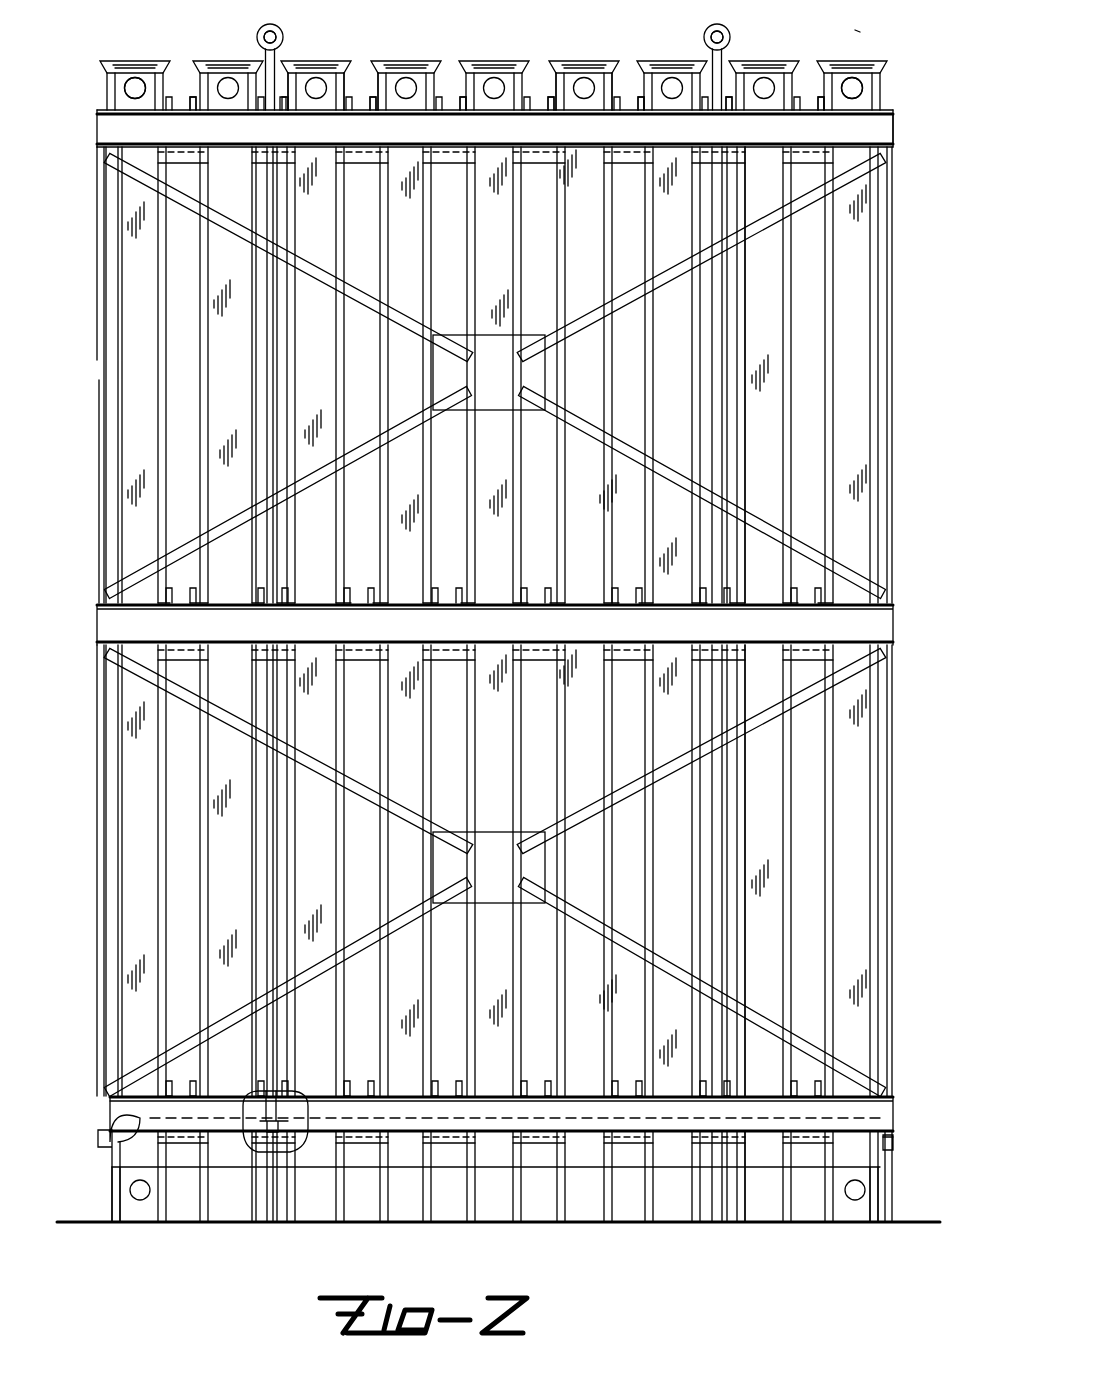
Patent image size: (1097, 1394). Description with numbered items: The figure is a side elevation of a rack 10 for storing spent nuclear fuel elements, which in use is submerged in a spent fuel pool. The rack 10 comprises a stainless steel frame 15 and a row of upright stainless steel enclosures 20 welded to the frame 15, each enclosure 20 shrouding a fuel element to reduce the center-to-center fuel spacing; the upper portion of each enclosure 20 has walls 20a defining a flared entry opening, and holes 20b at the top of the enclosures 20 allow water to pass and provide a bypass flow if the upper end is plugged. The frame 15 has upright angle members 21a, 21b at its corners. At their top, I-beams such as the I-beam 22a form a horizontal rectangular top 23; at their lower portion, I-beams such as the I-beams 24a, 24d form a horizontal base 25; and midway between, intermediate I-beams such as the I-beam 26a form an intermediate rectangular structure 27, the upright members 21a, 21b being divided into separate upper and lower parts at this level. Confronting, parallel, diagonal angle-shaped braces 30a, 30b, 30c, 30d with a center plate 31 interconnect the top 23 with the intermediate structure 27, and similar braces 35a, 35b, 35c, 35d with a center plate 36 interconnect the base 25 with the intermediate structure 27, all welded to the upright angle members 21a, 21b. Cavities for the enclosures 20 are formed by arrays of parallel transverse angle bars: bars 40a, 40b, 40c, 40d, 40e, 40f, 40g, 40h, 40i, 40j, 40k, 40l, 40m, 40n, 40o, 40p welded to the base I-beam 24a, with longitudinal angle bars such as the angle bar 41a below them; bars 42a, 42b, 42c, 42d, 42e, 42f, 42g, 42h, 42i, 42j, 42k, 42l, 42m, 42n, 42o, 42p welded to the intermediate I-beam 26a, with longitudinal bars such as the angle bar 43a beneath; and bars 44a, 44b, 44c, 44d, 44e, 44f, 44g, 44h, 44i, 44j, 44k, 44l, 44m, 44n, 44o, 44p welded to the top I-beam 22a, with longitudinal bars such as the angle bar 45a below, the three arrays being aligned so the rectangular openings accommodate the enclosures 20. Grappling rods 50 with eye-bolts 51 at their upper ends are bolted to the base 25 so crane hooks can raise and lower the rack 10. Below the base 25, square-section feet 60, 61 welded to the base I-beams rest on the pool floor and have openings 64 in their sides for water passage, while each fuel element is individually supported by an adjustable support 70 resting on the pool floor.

The rack 10 is at (868, 22).
The frame 15 is at (97, 110).
The upright enclosure 20 is at (205, 60).
The walls 20a is at (372, 45).
The holes 20b is at (135, 88).
The upright angle member 21a is at (112, 240).
The upright angle member 21b is at (880, 223).
The I-beam 22a is at (97, 131).
The top 23 is at (893, 118).
The I-beam 24a is at (893, 1120).
The I-beam 24d is at (110, 1121).
The base 25 is at (893, 1098).
The I-beam 26a is at (893, 642).
The intermediate rectangular structure 27 is at (893, 606).
The diagonal angle-shaped brace 30a is at (143, 184).
The diagonal angle-shaped brace 30b is at (845, 180).
The diagonal angle-shaped brace 30c is at (845, 548).
The diagonal angle-shaped brace 30d is at (145, 556).
The center plate 31 is at (512, 386).
The diagonal angle-shaped brace 35a is at (143, 683).
The diagonal angle-shaped brace 35b is at (845, 678).
The diagonal angle-shaped brace 35c is at (845, 1045).
The diagonal angle-shaped brace 35d is at (145, 1052).
The center plate 36 is at (492, 834).
The angle bar 40a is at (165, 1093).
The angle bar 40b is at (192, 1093).
The angle bar 40c is at (250, 1105).
The angle bar 40d is at (280, 1088).
The angle bar 40e is at (355, 1112).
The angle bar 40f is at (372, 1093).
The angle bar 40g is at (437, 1102).
The angle bar 40h is at (460, 1100).
The angle bar 40i is at (528, 1102).
The angle bar 40j is at (550, 1093).
The angle bar 40k is at (617, 1101).
The angle bar 40l is at (637, 1102).
The angle bar 40m is at (705, 1100).
The angle bar 40n is at (730, 1100).
The angle bar 40o is at (796, 1100).
The angle bar 40p is at (860, 1072).
The angle bar 41a is at (893, 1143).
The angle bar 42a is at (160, 603).
The angle bar 42b is at (196, 603).
The angle bar 42c is at (258, 603).
The angle bar 42d is at (284, 603).
The angle bar 42e is at (345, 603).
The angle bar 42f is at (374, 603).
The angle bar 42g is at (433, 603).
The angle bar 42h is at (463, 603).
The angle bar 42i is at (521, 603).
The angle bar 42j is at (551, 603).
The angle bar 42k is at (612, 603).
The angle bar 42l is at (640, 603).
The angle bar 42m is at (701, 603).
The angle bar 42n is at (731, 603).
The angle bar 42o is at (792, 603).
The angle bar 42p is at (820, 603).
The angle bar 43a is at (185, 655).
The angle bar 44a is at (165, 110).
The angle bar 44b is at (195, 110).
The angle bar 44c is at (258, 110).
The angle bar 44d is at (285, 110).
The angle bar 44e is at (345, 110).
The angle bar 44f is at (372, 110).
The angle bar 44g is at (435, 110).
The angle bar 44h is at (462, 105).
The angle bar 44i is at (522, 110).
The angle bar 44j is at (550, 110).
The angle bar 44k is at (615, 110).
The angle bar 44l is at (636, 105).
The angle bar 44m is at (700, 110).
The angle bar 44n is at (728, 110).
The angle bar 44o is at (792, 110).
The angle bar 44p is at (815, 110).
The angle bar 45a is at (185, 160).
The grappling rod 50 is at (262, 25).
The eye-bolt 51 is at (257, 37).
The foot 60 is at (108, 1165).
The foot 61 is at (882, 1168).
The openings 64 is at (132, 1192).
The adjustable support 70 is at (292, 1210).